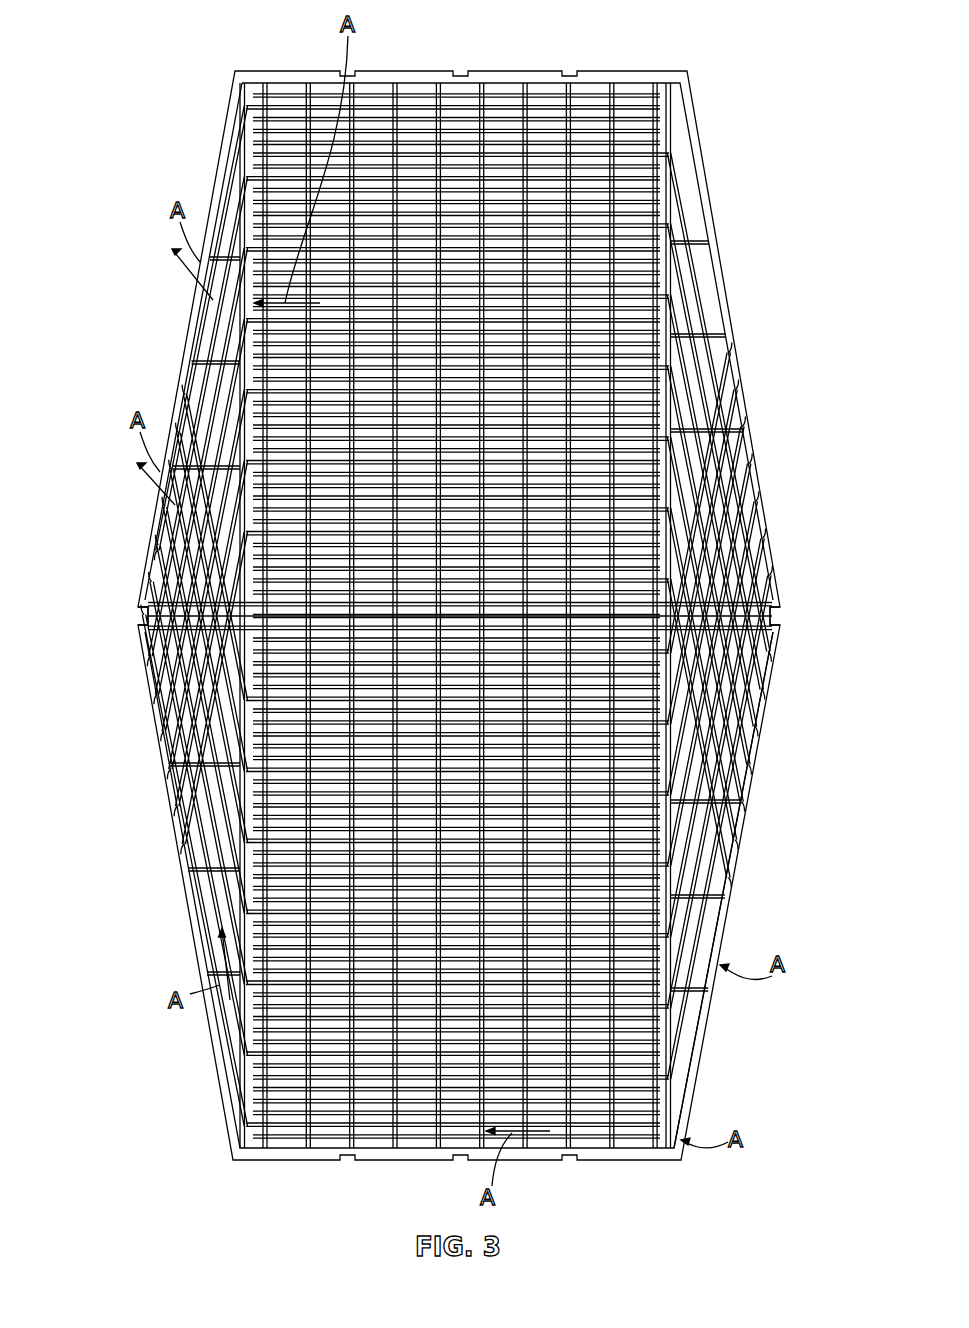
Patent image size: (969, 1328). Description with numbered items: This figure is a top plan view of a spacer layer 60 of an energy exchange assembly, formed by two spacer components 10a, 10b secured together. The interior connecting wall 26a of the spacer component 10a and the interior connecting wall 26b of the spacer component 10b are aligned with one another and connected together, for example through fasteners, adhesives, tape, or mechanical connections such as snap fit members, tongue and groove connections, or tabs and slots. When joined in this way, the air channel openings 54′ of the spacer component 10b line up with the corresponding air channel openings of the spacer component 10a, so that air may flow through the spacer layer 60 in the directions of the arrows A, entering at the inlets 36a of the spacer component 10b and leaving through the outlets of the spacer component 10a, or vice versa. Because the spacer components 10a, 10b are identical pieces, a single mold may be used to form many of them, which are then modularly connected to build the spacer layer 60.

The spacer layer 60 is at (113, 48).
The spacer component 10a is at (717, 276).
The spacer component 10b is at (745, 800).
The interior connecting wall 26a is at (633, 603).
The interior connecting wall 26b is at (650, 623).
The air channel openings 54′ is at (153, 626).
The inlets 36a is at (698, 1086).